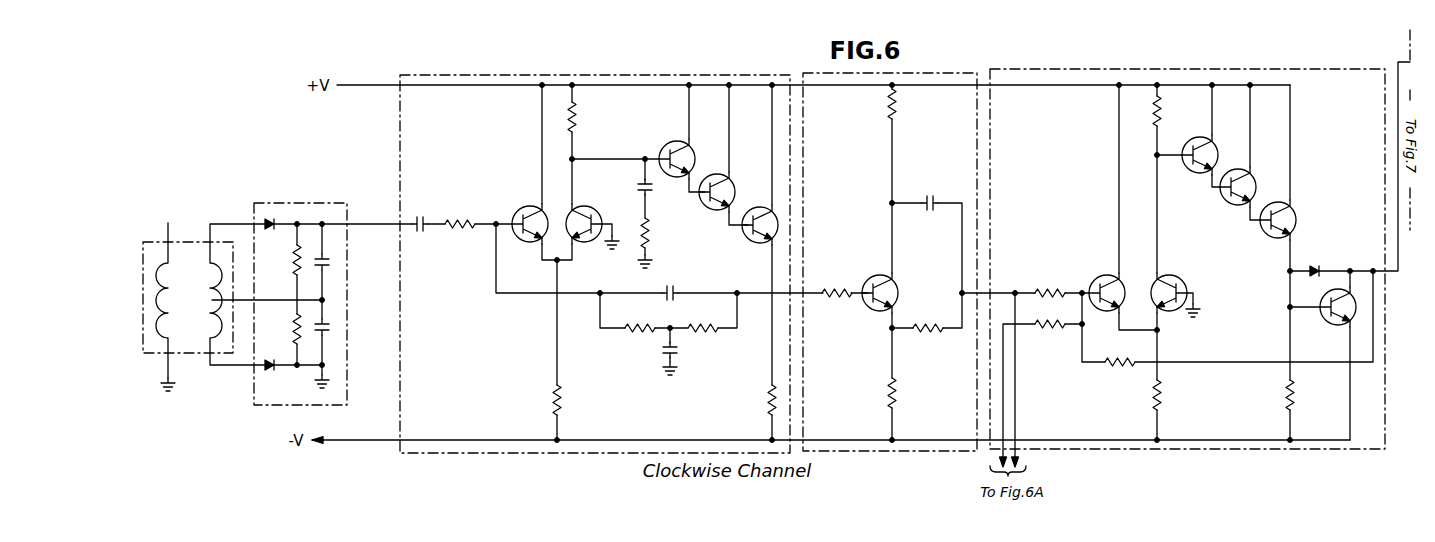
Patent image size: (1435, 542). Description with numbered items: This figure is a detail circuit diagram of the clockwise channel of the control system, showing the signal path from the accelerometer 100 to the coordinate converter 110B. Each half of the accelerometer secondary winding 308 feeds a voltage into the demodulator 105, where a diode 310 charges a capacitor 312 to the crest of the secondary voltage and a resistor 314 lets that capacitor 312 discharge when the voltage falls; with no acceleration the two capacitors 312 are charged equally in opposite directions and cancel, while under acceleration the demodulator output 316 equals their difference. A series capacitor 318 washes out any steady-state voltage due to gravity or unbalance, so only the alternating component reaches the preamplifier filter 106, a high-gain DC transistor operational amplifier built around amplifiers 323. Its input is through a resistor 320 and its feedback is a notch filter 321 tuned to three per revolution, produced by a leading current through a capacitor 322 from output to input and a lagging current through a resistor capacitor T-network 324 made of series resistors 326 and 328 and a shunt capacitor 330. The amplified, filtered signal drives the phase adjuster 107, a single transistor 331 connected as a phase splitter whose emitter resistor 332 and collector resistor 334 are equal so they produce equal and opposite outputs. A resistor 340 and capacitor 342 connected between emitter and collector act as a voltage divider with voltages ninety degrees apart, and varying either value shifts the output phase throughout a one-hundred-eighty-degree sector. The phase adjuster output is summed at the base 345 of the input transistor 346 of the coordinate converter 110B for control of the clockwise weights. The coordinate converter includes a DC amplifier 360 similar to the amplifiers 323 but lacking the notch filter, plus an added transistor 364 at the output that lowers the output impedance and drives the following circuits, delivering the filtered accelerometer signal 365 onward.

The accelerometer 100 is at (148, 244).
The demodulator 105 is at (318, 203).
The preamplifier filter 106 is at (602, 72).
The phase adjuster 107 is at (930, 70).
The coordinate converter 110B is at (1245, 68).
The accelerometer secondary winding 308 is at (196, 352).
The diode 310 is at (269, 220).
The capacitor 312 is at (332, 261).
The resistor 314 is at (295, 262).
The output of the demodulator 316 is at (363, 224).
The series capacitor 318 is at (422, 232).
The resistor 320 is at (461, 218).
The notch filter 321 is at (638, 292).
The capacitor 322 is at (672, 291).
The amplifier 323 is at (702, 201).
The resistor capacitor T-network 324 is at (665, 337).
The series resistor 326 is at (624, 332).
The series resistor 328 is at (718, 334).
The shunt capacitor 330 is at (659, 357).
The transistor 331 is at (876, 282).
The emitter resistor 332 is at (899, 394).
The collector resistor 334 is at (900, 105).
The resistor 340 is at (926, 334).
The capacitor 342 is at (931, 192).
The base 345 is at (1072, 290).
The input transistor 346 is at (1110, 314).
The DC amplifier 360 is at (1226, 208).
The transistor 364 is at (1336, 320).
The accelerometer signal 365 is at (1397, 90).